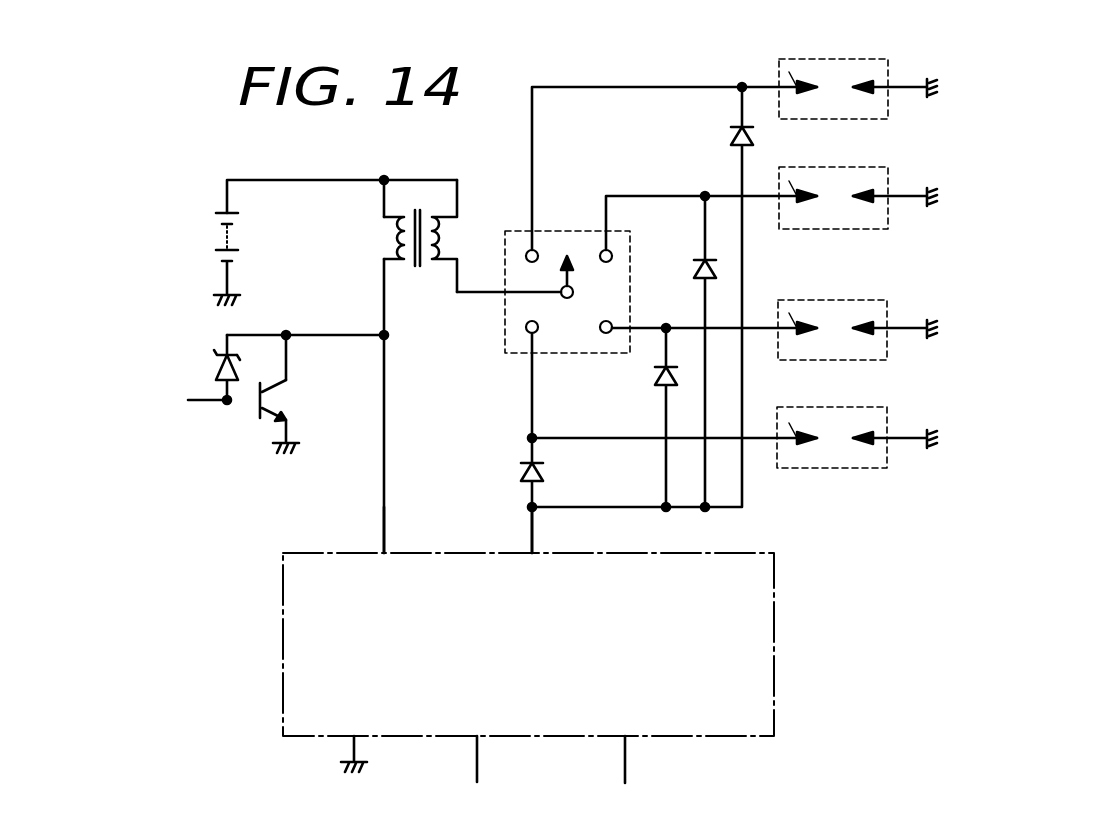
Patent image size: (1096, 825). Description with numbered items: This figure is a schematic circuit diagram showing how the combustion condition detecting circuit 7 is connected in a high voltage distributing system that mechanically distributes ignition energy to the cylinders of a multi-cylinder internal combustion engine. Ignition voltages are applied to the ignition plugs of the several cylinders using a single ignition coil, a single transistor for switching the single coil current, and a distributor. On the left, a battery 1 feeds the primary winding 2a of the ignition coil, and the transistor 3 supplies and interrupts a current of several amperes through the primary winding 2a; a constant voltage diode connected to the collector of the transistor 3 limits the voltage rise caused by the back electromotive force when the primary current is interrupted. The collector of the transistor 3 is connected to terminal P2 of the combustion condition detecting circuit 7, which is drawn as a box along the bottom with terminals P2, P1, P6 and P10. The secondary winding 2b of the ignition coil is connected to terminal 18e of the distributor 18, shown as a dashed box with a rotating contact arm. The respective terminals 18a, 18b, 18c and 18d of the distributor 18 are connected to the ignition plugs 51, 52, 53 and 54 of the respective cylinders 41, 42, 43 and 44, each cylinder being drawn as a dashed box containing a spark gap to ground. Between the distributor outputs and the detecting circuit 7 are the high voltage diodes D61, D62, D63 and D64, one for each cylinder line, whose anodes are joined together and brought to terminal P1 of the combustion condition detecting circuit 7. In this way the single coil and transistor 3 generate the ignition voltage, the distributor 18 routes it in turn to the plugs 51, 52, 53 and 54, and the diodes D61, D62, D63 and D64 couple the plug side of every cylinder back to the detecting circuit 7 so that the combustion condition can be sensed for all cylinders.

The battery 1 is at (238, 241).
The primary winding of ignition coil 2a is at (387, 241).
The secondary winding of ignition coil 2b is at (441, 241).
The transistor 3 is at (257, 424).
The combustion condition detecting circuit 7 is at (757, 550).
The distributor 18 is at (622, 234).
The terminal of distributor 18a is at (532, 135).
The terminal of distributor 18b is at (634, 196).
The terminal of distributor 18c is at (658, 328).
The terminal of distributor 18d is at (532, 373).
The terminal of distributor 18e is at (478, 295).
The high voltage diode D61 is at (733, 136).
The high voltage diode D62 is at (697, 268).
The high voltage diode D63 is at (660, 380).
The high voltage diode D64 is at (541, 473).
The cylinder 41 is at (872, 57).
The cylinder 42 is at (872, 165).
The cylinder 43 is at (870, 298).
The cylinder 44 is at (870, 405).
The ignition plug 51 is at (789, 72).
The ignition plug 52 is at (789, 180).
The ignition plug 53 is at (787, 313).
The ignition plug 54 is at (787, 420).
The terminal P1 is at (532, 527).
The terminal P2 is at (384, 527).
The terminal P6 is at (477, 758).
The terminal P10 is at (625, 758).